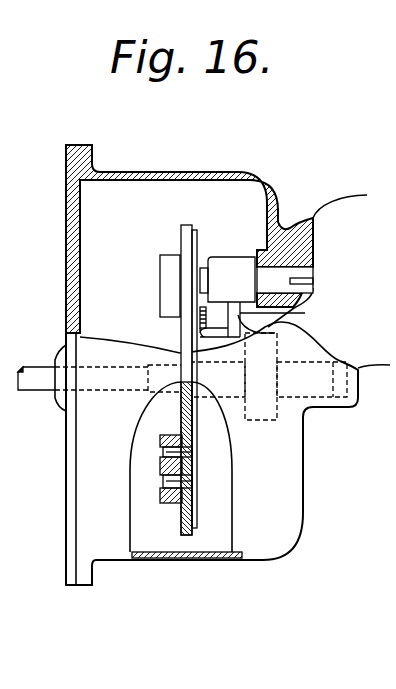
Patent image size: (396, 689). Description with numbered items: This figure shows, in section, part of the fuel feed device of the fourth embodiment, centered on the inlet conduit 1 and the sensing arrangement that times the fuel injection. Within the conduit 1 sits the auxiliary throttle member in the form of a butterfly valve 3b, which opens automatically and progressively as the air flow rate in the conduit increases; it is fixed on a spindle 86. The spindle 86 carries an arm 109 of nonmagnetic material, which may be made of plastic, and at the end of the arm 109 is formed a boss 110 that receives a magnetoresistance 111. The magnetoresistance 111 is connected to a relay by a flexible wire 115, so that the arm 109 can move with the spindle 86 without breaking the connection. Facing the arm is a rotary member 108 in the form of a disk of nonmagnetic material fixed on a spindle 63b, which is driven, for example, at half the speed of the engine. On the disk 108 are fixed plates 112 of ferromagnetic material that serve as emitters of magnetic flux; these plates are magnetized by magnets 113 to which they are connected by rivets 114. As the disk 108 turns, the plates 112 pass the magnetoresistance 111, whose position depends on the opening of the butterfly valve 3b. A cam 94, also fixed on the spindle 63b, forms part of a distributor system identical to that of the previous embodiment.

The inlet conduit 1 is at (310, 238).
The butterfly valve 3b is at (300, 282).
The spindle 86 is at (276, 276).
The arm 109 is at (218, 305).
The magnetoresistance 111 is at (203, 327).
The flexible wire 115 is at (284, 314).
The boss 110 is at (300, 338).
The spindle 63b is at (33, 380).
The rotary member 108 is at (180, 420).
The cam 94 is at (260, 417).
The rivets 114 is at (162, 483).
The magnets 113 is at (172, 503).
The plates 112 is at (198, 515).